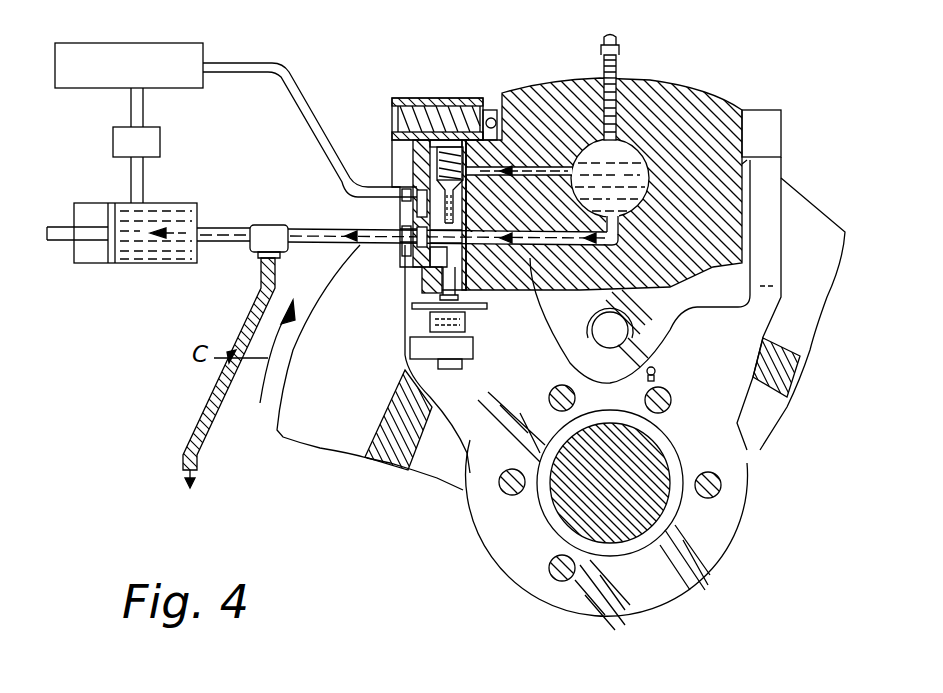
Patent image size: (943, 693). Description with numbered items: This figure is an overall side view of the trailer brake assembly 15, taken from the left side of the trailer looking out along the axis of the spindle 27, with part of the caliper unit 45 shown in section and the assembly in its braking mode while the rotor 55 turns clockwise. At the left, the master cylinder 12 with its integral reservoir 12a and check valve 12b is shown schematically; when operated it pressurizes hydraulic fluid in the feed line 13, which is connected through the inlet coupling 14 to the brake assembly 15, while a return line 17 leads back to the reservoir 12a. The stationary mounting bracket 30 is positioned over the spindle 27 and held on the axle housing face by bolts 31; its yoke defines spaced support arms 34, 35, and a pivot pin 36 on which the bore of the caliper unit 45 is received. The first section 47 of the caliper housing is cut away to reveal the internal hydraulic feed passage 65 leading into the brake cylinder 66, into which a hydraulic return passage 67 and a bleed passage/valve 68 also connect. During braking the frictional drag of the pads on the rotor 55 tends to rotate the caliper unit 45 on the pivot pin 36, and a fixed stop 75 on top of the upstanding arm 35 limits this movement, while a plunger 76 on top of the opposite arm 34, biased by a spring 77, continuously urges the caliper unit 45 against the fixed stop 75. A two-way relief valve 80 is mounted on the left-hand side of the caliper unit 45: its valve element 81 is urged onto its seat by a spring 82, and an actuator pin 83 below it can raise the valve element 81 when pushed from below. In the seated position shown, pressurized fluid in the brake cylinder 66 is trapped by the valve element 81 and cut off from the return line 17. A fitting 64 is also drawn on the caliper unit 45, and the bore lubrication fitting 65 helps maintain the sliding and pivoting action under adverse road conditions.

The master cylinder 12 is at (133, 263).
The reservoir 12a is at (163, 44).
The check valve 12b is at (160, 142).
The feed line 13 is at (238, 253).
The inlet coupling 14 is at (402, 257).
The master brake assembly 15 is at (560, 74).
The return line 17 is at (252, 74).
The spindle 27 is at (632, 538).
The mounting bracket 30 is at (458, 514).
The bolts 31 is at (558, 570).
The support arm 34 is at (412, 288).
The support arm 35 is at (760, 223).
The pivot pin 36 is at (602, 340).
The caliper unit 45 is at (588, 72).
The housing first section 47 is at (695, 126).
The rotor 55 is at (338, 298).
The fitting 64 is at (656, 370).
The hydraulic feed passage 65 is at (545, 292).
The brake cylinder 66 is at (633, 141).
The hydraulic return passage 67 is at (503, 110).
The bleed passage/valve 68 is at (620, 50).
The fixed stop 75 is at (763, 140).
The plunger 76 is at (488, 118).
The spring 77 is at (422, 98).
The two-way relief valve 80 is at (368, 158).
The valve element 81 is at (468, 201).
The spring 82 is at (470, 165).
The actuator pin 83 is at (462, 287).